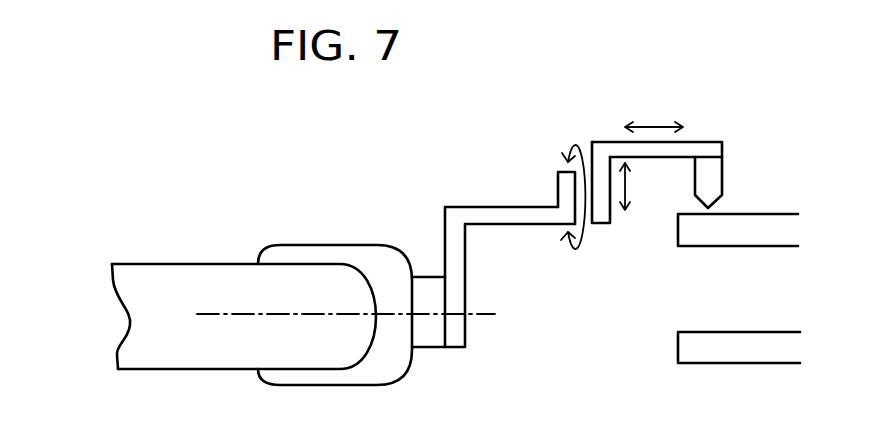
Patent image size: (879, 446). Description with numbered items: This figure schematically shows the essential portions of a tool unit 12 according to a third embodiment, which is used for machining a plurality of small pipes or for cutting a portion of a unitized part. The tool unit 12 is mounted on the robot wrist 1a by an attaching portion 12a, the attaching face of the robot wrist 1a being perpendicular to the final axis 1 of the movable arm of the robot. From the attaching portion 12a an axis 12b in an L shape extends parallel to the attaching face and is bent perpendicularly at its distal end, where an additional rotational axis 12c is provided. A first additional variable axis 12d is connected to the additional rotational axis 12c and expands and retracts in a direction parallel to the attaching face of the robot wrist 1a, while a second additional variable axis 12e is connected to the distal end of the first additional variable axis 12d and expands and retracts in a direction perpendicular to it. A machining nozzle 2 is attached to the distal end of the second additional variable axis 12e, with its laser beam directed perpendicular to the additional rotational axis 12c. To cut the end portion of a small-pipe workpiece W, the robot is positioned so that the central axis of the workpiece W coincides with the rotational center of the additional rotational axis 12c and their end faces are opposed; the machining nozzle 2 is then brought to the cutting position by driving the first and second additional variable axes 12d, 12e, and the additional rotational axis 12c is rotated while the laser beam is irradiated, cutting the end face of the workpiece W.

The final axis 1 is at (237, 314).
The robot wrist 1a is at (380, 278).
The tool unit 12 is at (569, 133).
The attaching portion 12a is at (427, 335).
The axis 12b is at (457, 262).
The additional rotational axis 12c is at (572, 224).
The first additional variable axis 12d is at (603, 207).
The second additional variable axis 12e is at (707, 148).
The machining nozzle 2 is at (710, 185).
The workpiece W is at (748, 230).